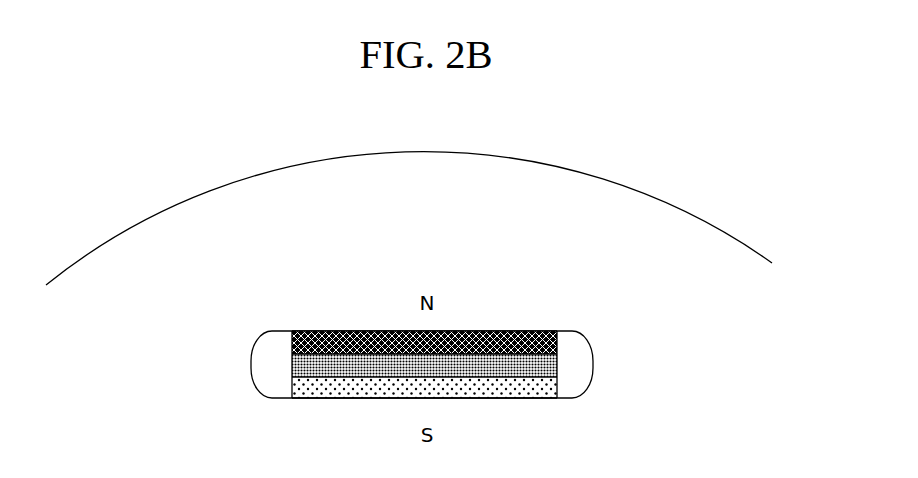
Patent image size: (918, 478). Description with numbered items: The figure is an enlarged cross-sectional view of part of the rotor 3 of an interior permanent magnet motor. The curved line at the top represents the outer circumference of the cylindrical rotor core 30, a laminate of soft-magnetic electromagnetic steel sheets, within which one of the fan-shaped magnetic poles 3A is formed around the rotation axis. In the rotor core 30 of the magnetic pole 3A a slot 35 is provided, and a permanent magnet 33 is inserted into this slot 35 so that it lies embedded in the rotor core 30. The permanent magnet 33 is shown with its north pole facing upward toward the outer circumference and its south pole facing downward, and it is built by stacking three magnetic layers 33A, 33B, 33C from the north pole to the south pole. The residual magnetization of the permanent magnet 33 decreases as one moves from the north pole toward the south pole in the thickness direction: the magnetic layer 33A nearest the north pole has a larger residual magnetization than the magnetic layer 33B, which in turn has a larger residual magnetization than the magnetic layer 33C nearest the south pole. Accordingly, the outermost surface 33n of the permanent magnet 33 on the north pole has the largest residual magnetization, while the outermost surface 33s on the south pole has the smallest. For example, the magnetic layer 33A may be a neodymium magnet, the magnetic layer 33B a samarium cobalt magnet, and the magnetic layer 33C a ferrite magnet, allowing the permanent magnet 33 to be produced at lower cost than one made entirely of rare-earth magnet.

The rotor 3 is at (716, 132).
The magnetic pole 3A is at (148, 293).
The rotor core 30 is at (692, 237).
The permanent magnet 33 is at (514, 366).
The magnetic layer 33A is at (552, 342).
The magnetic layer 33B is at (552, 360).
The magnetic layer 33C is at (552, 386).
The outermost surface on the north pole 33n is at (520, 329).
The outermost surface on the south pole 33s is at (500, 399).
The slot 35 is at (272, 352).